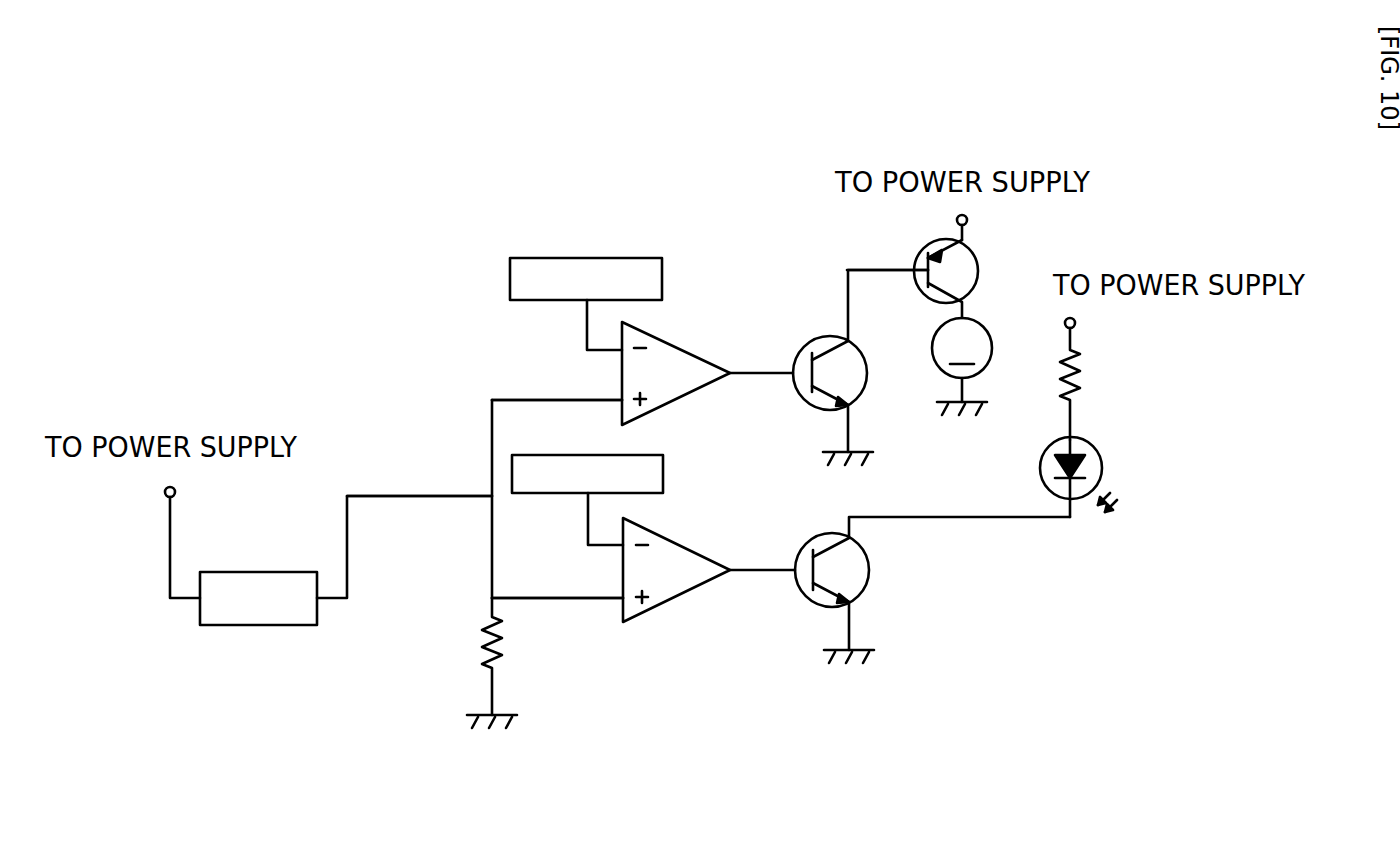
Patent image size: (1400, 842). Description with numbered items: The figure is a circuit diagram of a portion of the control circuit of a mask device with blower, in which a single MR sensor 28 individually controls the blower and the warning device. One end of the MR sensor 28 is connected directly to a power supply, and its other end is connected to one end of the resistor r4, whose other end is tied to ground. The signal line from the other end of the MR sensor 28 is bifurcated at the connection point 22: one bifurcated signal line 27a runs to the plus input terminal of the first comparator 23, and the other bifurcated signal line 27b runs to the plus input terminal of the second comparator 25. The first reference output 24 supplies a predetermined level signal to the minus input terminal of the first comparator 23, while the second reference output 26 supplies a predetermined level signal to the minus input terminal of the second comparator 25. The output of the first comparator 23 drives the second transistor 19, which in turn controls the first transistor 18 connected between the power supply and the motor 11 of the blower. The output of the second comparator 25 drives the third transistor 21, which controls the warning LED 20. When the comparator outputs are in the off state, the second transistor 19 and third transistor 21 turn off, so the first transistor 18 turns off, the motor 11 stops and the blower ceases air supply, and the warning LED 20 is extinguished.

The motor 11 is at (995, 348).
The first transistor 18 is at (978, 252).
The second transistor 19 is at (813, 338).
The warning LED 20 is at (1102, 468).
The third transistor 21 is at (867, 592).
The connection point 22 is at (492, 496).
The first comparator 23 is at (677, 400).
The first reference output 24 is at (662, 268).
The second comparator 25 is at (657, 608).
The second reference output 26 is at (663, 480).
The bifurcated signal line 27a is at (530, 398).
The bifurcated signal line 27b is at (520, 600).
The MR sensor 28 is at (278, 625).
The resistor r4 is at (477, 663).